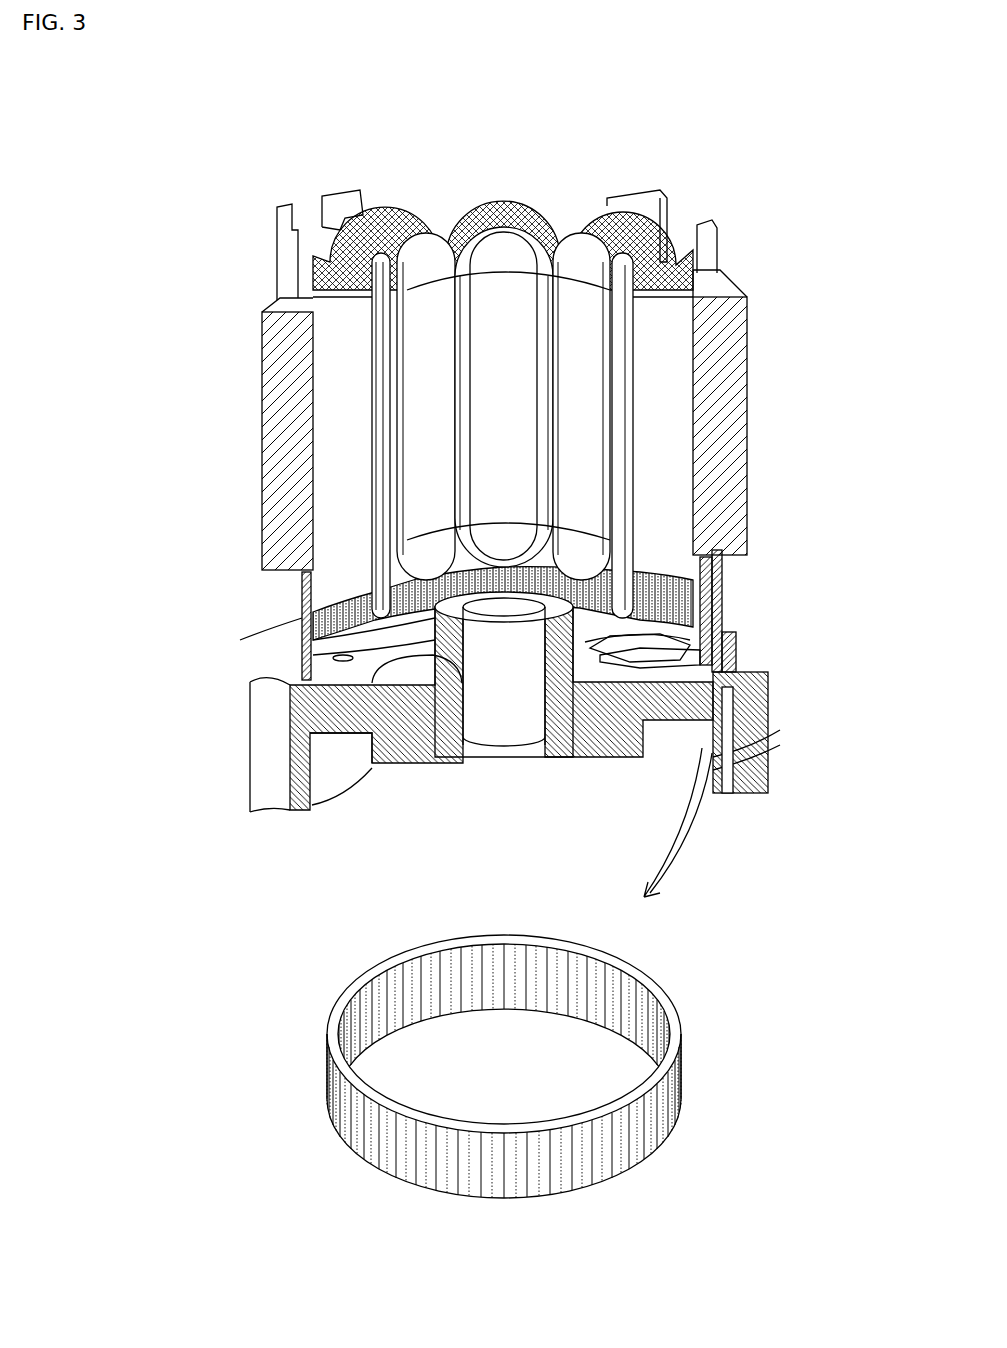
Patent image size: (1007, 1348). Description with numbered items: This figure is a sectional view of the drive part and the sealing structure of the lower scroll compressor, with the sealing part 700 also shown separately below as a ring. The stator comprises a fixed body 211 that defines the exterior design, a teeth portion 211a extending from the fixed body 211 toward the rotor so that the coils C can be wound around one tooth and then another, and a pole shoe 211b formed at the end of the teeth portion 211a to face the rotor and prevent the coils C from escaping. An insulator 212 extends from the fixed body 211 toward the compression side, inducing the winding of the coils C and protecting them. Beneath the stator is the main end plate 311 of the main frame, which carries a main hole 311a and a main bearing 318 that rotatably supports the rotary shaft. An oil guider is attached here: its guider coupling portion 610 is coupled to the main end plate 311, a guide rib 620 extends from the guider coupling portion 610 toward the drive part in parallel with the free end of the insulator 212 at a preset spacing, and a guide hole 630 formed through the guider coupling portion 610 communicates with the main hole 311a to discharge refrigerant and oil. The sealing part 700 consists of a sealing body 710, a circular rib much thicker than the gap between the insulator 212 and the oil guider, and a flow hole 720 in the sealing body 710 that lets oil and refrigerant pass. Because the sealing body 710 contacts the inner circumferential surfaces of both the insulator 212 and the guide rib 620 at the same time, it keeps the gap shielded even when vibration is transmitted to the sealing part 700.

The coils C is at (388, 215).
The fixed body 211 is at (275, 368).
The teeth portion 211a is at (328, 420).
The pole shoe 211b is at (385, 572).
The insulator 212 is at (722, 585).
The sealing part 700 is at (722, 618).
The sealing body 710 is at (305, 612).
The flow hole 720 is at (385, 632).
The main end plate 311 is at (297, 707).
The main hole 311a is at (610, 757).
The main bearing 318 is at (425, 765).
The guider coupling portion 610 is at (752, 700).
The guide rib 620 is at (736, 650).
The guide hole 630 is at (660, 705).